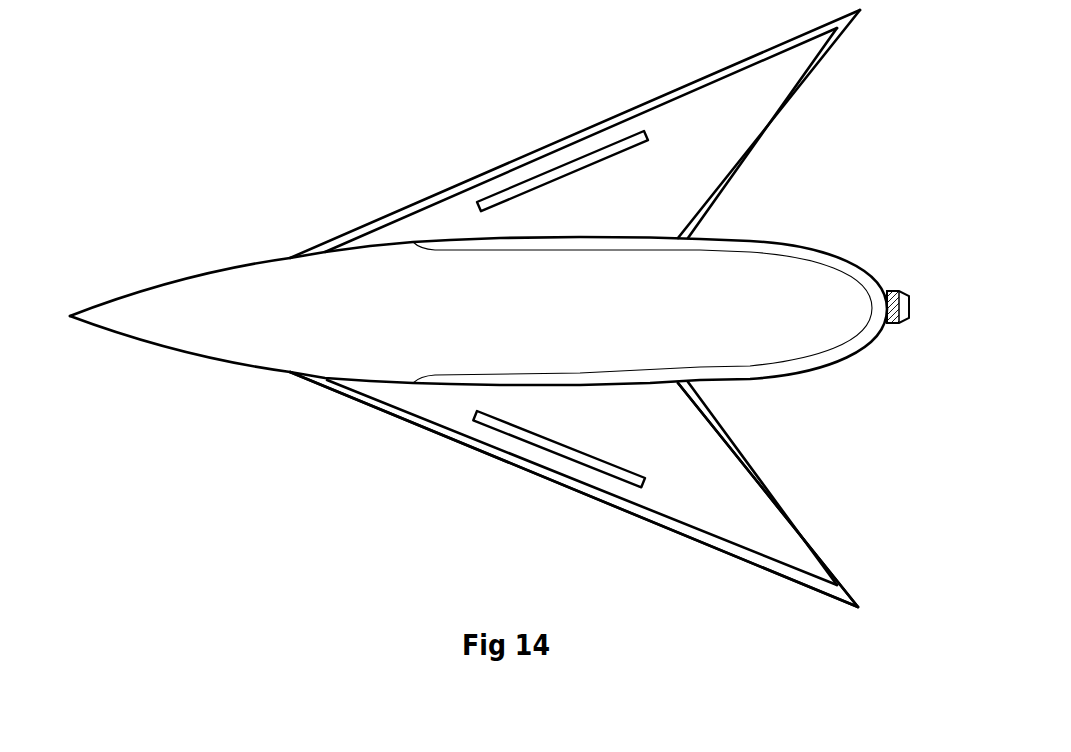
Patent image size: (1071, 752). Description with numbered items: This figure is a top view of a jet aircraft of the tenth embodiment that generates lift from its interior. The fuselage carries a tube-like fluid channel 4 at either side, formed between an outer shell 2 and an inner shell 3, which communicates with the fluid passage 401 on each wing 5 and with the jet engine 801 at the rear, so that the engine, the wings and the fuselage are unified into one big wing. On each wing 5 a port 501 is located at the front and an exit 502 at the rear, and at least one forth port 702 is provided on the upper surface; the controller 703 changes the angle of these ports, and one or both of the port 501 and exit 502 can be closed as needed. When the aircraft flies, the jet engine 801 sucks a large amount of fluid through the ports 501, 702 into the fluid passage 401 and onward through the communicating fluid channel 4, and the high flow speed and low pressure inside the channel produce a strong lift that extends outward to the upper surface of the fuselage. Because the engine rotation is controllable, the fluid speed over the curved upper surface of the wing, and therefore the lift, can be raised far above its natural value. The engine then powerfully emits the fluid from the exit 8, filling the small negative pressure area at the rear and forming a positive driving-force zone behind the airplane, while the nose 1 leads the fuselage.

The nose cone 1 is at (162, 300).
The outer shell 2 is at (547, 478).
The inner shell 3 is at (520, 470).
The fluid channel 4 is at (826, 257).
The wing 5 is at (688, 147).
The fluid passage 401 is at (687, 495).
The port 501 is at (675, 97).
The exit 502 is at (802, 90).
The forth port 702 is at (500, 167).
The controller 703 is at (558, 181).
The exit 8 is at (924, 279).
The jet engine 801 is at (890, 292).